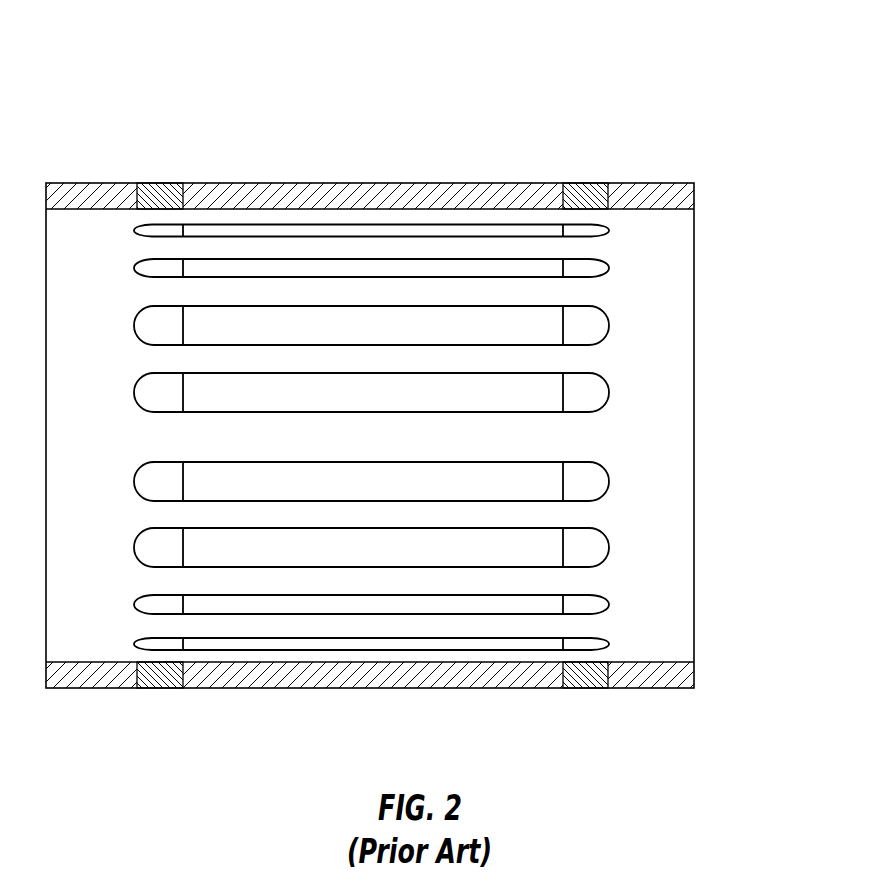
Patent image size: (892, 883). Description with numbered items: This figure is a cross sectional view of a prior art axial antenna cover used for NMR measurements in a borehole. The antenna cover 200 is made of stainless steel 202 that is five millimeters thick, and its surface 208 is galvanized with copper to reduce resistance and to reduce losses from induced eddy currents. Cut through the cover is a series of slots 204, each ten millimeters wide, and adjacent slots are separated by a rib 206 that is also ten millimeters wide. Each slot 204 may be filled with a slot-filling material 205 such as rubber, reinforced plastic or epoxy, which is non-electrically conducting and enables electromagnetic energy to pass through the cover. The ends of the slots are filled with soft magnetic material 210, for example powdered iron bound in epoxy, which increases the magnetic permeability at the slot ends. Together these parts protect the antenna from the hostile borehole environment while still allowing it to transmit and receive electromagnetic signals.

The antenna cover 200 is at (679, 68).
The stainless steel 202 is at (695, 196).
The slot 204 is at (597, 375).
The slot-filling material 205 is at (253, 192).
The rib 206 is at (566, 365).
The surface 208 is at (672, 588).
The soft magnetic material 210 is at (147, 190).